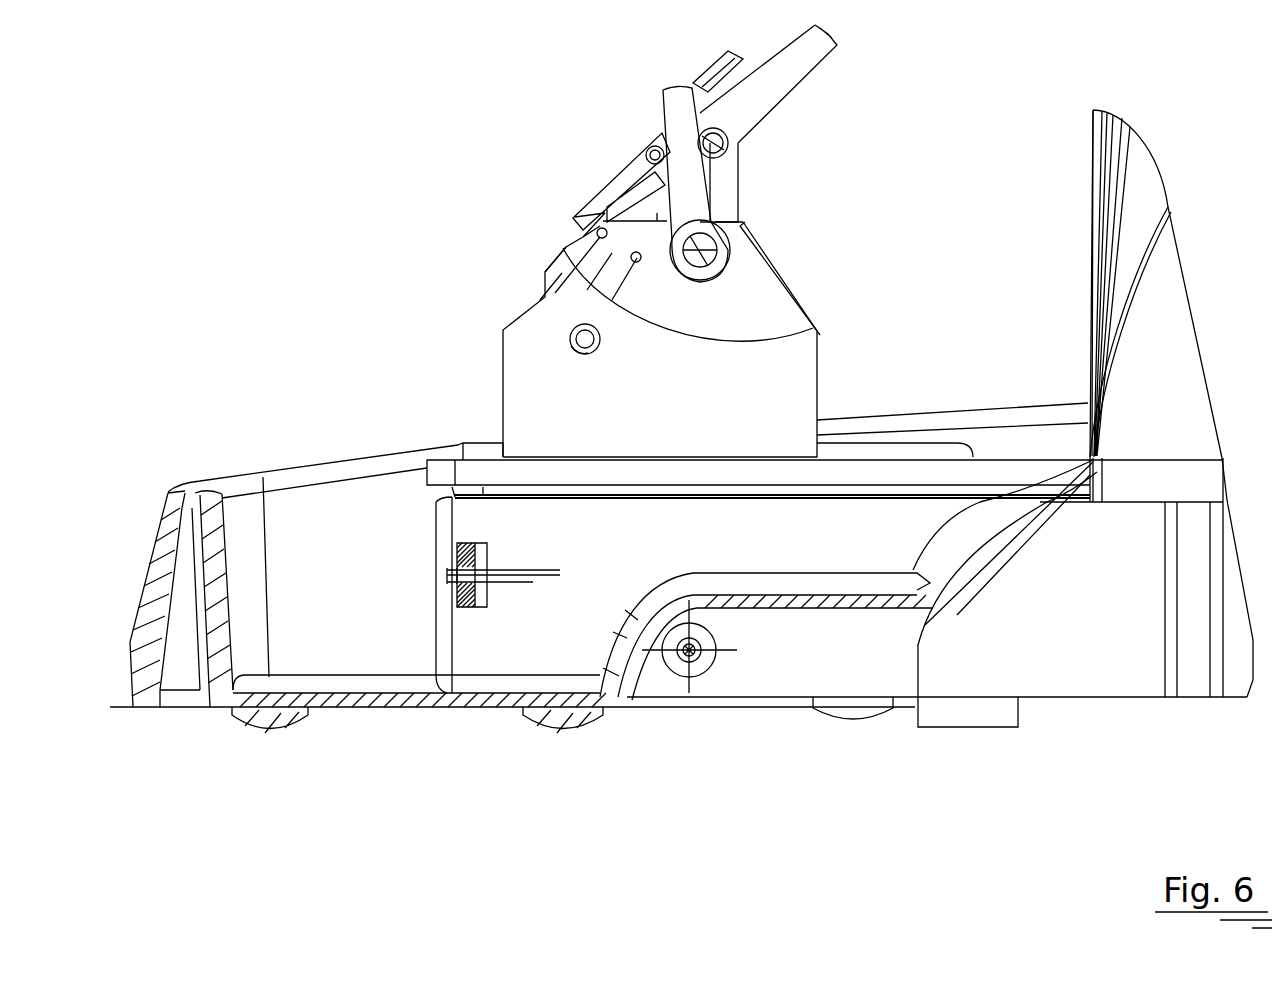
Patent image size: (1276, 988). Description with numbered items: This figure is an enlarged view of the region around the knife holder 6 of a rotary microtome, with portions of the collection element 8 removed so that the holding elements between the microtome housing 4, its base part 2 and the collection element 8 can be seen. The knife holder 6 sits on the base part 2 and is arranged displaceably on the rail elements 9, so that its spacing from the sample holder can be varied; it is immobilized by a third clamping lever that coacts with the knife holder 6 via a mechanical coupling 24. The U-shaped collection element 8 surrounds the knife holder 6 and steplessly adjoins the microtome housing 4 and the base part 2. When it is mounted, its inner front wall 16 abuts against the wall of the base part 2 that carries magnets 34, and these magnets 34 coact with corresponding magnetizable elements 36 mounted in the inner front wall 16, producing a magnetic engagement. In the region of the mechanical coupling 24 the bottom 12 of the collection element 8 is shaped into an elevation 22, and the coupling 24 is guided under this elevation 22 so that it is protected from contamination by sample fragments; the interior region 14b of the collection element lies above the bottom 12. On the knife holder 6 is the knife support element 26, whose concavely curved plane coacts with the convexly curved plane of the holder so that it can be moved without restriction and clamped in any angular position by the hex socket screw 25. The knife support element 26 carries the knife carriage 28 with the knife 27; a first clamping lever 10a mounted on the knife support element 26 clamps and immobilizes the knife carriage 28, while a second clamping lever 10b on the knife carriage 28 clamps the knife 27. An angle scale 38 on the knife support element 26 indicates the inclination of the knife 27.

The base part 2 is at (1088, 680).
The microtome housing 4 is at (1185, 357).
The knife holder 6 is at (520, 410).
The collection element 8 is at (277, 473).
The rail elements 9 is at (900, 450).
The first clamping lever 10a is at (683, 117).
The second clamping lever 10b is at (812, 62).
The bottom 12 is at (387, 690).
The chamber 14b is at (703, 552).
The inner front wall 16 is at (442, 540).
The elevation 22 is at (798, 597).
The mechanical coupling 24 is at (680, 660).
The hex socket screw 25 is at (587, 342).
The knife support element 26 is at (762, 255).
The knife 27 is at (737, 70).
The knife carriage 28 is at (737, 190).
The magnets 34 is at (475, 555).
The magnetizable elements 36 is at (440, 572).
The angle scale 38 is at (573, 243).